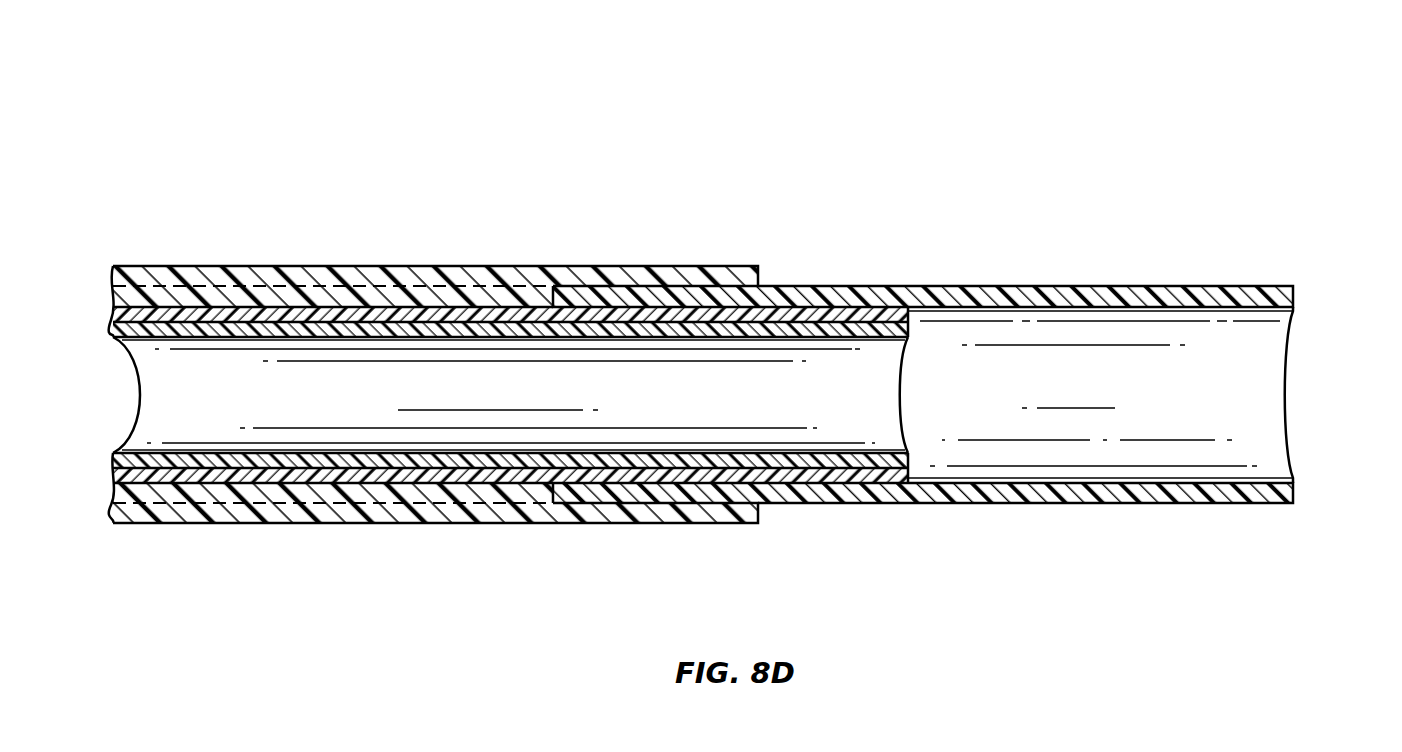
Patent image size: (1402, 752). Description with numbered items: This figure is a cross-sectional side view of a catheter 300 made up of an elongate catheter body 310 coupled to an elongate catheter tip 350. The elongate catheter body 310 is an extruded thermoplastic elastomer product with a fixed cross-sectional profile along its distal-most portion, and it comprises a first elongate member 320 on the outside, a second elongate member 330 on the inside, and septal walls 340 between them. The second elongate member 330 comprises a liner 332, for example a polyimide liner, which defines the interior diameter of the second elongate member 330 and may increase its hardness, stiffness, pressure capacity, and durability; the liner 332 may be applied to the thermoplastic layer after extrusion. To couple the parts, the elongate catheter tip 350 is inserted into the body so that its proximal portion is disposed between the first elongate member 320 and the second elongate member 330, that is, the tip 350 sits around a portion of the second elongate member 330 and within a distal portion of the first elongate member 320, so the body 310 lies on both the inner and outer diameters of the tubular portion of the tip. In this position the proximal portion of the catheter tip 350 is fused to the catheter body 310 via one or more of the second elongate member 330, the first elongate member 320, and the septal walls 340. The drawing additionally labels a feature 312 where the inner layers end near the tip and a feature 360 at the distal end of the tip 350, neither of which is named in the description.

The catheter 300 is at (680, 146).
The elongate catheter body 310 is at (475, 255).
The distal end of inner member 312 is at (903, 398).
The first elongate member 320 is at (408, 276).
The second elongate member 330 is at (830, 316).
The liner 332 is at (870, 330).
The septal walls 340 is at (455, 292).
The elongate catheter tip 350 is at (1069, 290).
The distal tip end 360 is at (1297, 378).